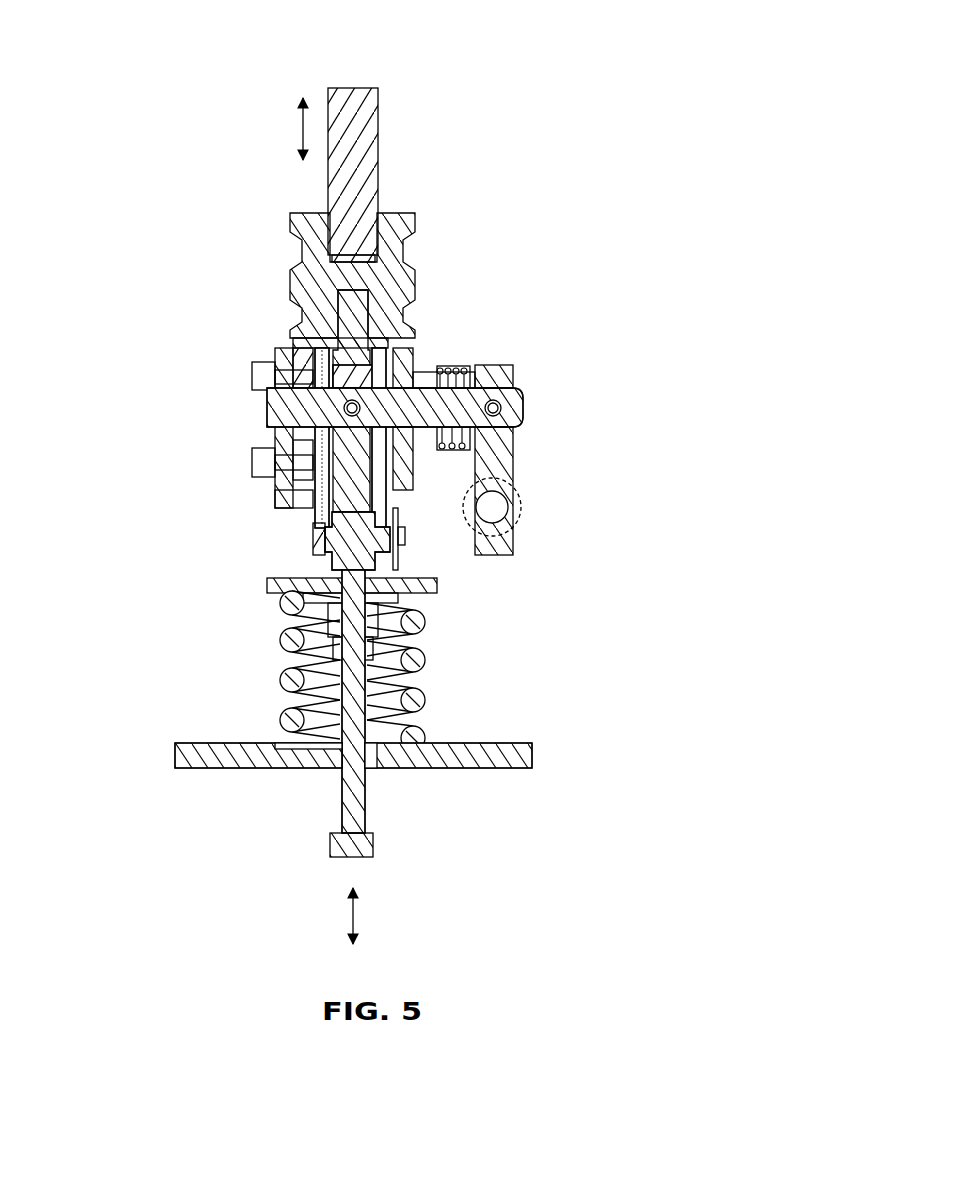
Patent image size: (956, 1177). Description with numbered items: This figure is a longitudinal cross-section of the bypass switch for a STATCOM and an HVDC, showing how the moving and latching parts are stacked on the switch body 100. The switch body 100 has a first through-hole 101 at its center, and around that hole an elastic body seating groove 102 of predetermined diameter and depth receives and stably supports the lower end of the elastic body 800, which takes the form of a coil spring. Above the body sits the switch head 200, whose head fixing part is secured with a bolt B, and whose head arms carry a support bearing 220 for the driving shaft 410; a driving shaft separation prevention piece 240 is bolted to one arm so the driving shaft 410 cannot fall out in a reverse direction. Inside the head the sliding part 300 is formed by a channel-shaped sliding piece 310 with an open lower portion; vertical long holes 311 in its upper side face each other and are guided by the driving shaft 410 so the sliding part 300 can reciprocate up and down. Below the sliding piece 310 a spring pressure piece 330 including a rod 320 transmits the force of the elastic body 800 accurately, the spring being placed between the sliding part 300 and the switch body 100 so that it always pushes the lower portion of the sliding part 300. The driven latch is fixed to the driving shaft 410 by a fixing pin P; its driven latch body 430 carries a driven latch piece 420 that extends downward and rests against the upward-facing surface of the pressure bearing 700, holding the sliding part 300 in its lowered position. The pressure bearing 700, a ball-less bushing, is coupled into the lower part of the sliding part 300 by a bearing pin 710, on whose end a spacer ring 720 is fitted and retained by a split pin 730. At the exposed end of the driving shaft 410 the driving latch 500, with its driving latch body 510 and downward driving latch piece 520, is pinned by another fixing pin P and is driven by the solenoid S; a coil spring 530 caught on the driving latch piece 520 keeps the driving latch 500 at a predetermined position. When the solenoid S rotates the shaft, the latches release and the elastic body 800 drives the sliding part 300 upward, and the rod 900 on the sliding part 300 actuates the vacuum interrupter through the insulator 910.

The rod 900 is at (373, 133).
The insulator 910 is at (417, 240).
The sliding part 300 is at (337, 289).
The sliding piece 310 is at (327, 348).
The vertical long holes 311 is at (300, 410).
The rod 320 is at (366, 790).
The spring pressure piece 330 is at (282, 592).
The driven latch body 430 is at (300, 340).
The driven latch piece 420 is at (290, 507).
The driving shaft 410 is at (520, 420).
The driving shaft separation prevention piece 240 is at (285, 440).
The support bearing 220 is at (255, 463).
The switch head 200 is at (423, 348).
The bolt B is at (262, 375).
The fixing pin P is at (510, 395).
The driving latch 500 is at (469, 444).
The driving latch body 510 is at (520, 380).
The driving latch piece 520 is at (505, 500).
The coil spring 530 is at (455, 365).
The solenoid S is at (505, 520).
The pressure bearing 700 is at (318, 520).
The bearing pin 710 is at (318, 542).
The split pin 730 is at (405, 545).
The spacer ring 720 is at (405, 577).
The elastic body 800 is at (287, 642).
The switch body 100 is at (248, 753).
The first through-hole 101 is at (342, 762).
The elastic body seating groove 102 is at (293, 745).